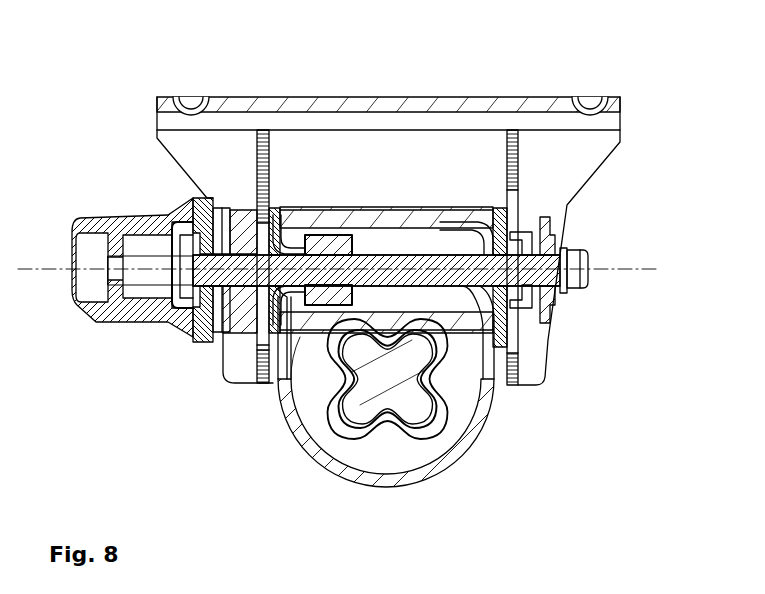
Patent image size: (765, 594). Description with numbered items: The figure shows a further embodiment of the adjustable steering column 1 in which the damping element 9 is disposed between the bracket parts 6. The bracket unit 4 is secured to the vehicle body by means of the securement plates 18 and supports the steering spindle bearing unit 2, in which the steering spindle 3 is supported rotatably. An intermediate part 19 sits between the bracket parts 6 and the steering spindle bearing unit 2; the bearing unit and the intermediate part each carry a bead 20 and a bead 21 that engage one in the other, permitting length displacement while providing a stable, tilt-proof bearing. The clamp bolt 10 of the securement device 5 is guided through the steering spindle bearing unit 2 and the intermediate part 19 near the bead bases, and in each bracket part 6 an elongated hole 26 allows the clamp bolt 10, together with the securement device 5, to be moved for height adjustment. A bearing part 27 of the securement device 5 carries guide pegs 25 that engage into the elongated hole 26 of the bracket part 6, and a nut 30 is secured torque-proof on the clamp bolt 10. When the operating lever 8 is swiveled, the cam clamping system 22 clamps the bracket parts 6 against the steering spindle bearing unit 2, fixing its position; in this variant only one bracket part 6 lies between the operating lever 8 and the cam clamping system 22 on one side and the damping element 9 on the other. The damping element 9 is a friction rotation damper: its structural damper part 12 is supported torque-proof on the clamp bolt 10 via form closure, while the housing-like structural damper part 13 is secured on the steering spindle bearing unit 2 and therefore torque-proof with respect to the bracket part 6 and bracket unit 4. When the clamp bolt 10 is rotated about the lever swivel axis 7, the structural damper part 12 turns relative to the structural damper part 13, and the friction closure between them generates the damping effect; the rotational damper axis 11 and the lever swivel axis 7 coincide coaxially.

The steering column 1 is at (133, 133).
The steering spindle bearing unit 2 is at (478, 440).
The steering spindle 3 is at (378, 380).
The bracket unit 4 is at (423, 110).
The securement device 5 is at (222, 365).
The bracket part 6 is at (262, 158).
The lever swivel axis 7 is at (628, 278).
The operating lever 8 is at (118, 307).
The damping element 9 is at (322, 238).
The clamp bolt 10 is at (420, 260).
The rotational damper axis 11 is at (376, 270).
The structural damper part 12 is at (298, 352).
The structural damper part 13 is at (320, 356).
The securement plate 18 is at (588, 103).
The intermediate part 19 is at (280, 216).
The bead 20 is at (300, 232).
The bead 21 is at (250, 335).
The cam clamping system 22 is at (200, 327).
The guide peg 25 is at (548, 240).
The elongated hole 26 is at (518, 225).
The bearing part 27 is at (525, 307).
The nut 30 is at (572, 262).